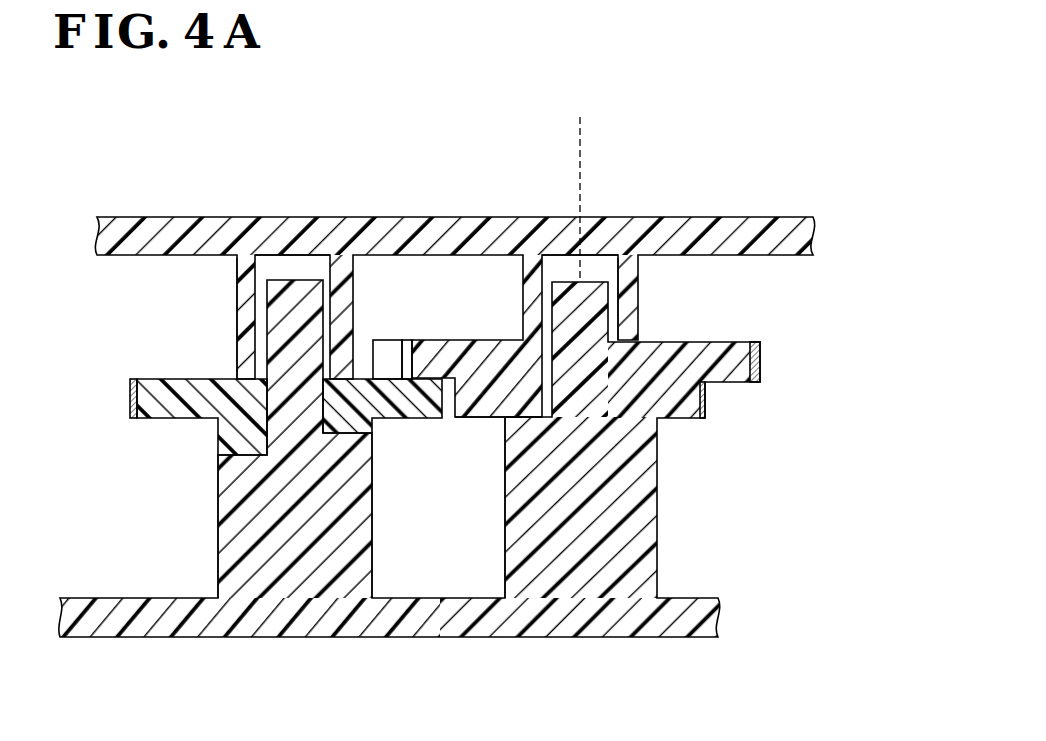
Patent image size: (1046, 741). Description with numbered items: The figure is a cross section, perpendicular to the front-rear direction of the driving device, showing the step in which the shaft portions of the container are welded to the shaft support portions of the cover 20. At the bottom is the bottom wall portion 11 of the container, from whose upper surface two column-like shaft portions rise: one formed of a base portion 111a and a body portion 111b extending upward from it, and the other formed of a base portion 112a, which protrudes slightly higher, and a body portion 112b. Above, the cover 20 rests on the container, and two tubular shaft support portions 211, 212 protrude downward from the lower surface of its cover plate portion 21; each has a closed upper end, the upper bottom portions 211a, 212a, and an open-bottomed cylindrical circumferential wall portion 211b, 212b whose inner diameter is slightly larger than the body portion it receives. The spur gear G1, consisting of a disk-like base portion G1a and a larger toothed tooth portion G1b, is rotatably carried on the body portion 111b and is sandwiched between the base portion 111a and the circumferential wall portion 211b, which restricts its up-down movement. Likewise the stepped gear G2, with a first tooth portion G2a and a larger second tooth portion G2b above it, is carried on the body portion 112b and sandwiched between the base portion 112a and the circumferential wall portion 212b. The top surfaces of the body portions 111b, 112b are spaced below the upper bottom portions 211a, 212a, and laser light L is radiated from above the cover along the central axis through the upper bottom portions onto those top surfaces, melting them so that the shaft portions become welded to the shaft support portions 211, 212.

The laser light L is at (580, 153).
The cover 20 is at (454, 279).
The cover plate portion 21 is at (440, 217).
The shaft support portion 211 is at (310, 317).
The upper bottom portion 211a is at (313, 256).
The circumferential wall portion 211b is at (237, 362).
The shaft support portion 212 is at (594, 336).
The upper bottom portion 212a is at (573, 256).
The circumferential wall portion 212b is at (638, 335).
The bottom wall portion 11 is at (409, 458).
The base portion 111a is at (218, 545).
The body portion 111b is at (372, 440).
The base portion 112a is at (505, 528).
The body portion 112b is at (530, 392).
The base portion G1a is at (218, 438).
The tooth portion G1b is at (130, 398).
The first tooth portion G2a is at (705, 400).
The second tooth portion G2b is at (762, 360).